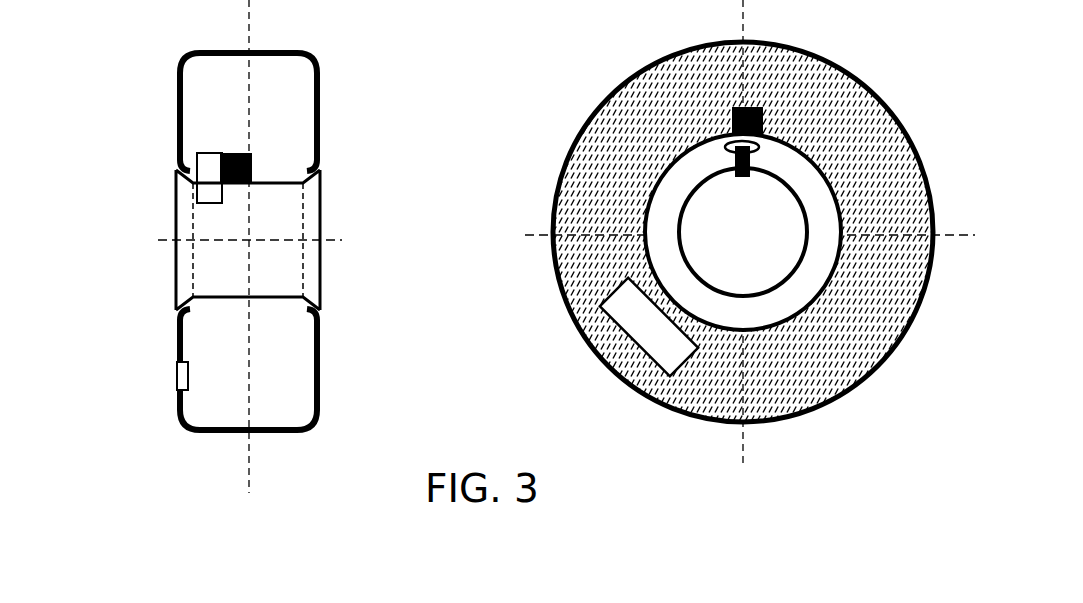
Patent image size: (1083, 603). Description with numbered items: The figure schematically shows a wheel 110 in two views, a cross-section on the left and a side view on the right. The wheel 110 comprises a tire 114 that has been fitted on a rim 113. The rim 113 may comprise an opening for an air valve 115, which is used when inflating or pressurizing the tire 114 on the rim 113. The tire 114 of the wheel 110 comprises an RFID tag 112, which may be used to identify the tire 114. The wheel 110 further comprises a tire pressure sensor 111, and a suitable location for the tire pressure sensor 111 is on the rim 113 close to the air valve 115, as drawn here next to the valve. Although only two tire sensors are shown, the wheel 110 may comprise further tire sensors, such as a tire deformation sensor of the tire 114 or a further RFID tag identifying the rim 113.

The wheel 110 is at (145, 109).
The tire pressure sensor 111 is at (250, 152).
The RFID tag 112 is at (175, 375).
The rim 113 is at (320, 215).
The tire 114 is at (320, 107).
The air valve 115 is at (210, 163).